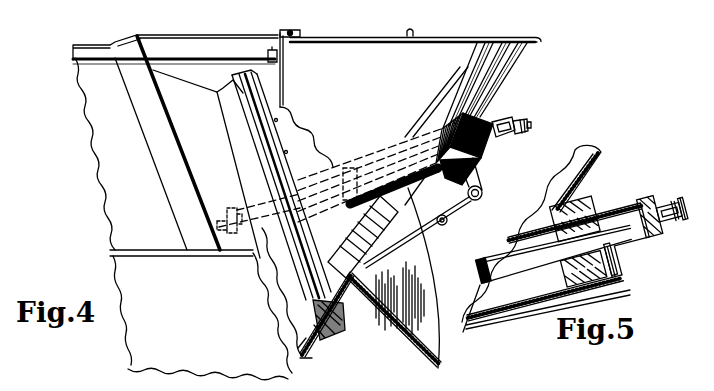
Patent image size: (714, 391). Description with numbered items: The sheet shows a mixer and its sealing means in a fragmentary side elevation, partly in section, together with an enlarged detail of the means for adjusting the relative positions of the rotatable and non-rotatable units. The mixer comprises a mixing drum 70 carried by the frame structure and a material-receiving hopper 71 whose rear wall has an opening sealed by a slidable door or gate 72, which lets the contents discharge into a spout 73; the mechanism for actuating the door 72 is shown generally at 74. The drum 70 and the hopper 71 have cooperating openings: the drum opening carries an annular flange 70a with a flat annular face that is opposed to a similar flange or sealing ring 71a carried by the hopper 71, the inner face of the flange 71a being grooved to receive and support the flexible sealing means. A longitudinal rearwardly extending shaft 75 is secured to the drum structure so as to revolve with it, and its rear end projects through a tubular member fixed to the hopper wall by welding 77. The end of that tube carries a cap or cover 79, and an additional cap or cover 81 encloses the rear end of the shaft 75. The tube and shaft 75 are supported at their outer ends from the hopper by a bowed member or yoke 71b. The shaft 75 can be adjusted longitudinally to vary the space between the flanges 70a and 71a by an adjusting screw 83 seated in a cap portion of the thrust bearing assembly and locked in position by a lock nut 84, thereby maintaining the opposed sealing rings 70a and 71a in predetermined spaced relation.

In FIG. 4, the mixing drum 70 is at (122, 129).
In FIG. 4, the annular flange 70a is at (323, 343).
In FIG. 4, the material-receiving hopper 71 is at (387, 82).
In FIG. 4, the flange or sealing ring 71a is at (340, 327).
In FIG. 4, the bowed member or yoke 71b is at (368, 167).
In FIG. 4, the slidable door or gate 72 is at (353, 248).
In FIG. 4, the spout 73 is at (397, 312).
In FIG. 4, the door actuating mechanism 74 is at (443, 222).
In FIG. 4, the shaft 75 is at (235, 210).
In FIG. 5, the welding 77 is at (545, 222).
In FIG. 4, the cap or cover 79 is at (495, 150).
In FIG. 4, the additional cap or cover 81 is at (502, 121).
In FIG. 4, the adjusting screw 83 is at (525, 122).
In FIG. 4, the lock nut 84 is at (517, 128).